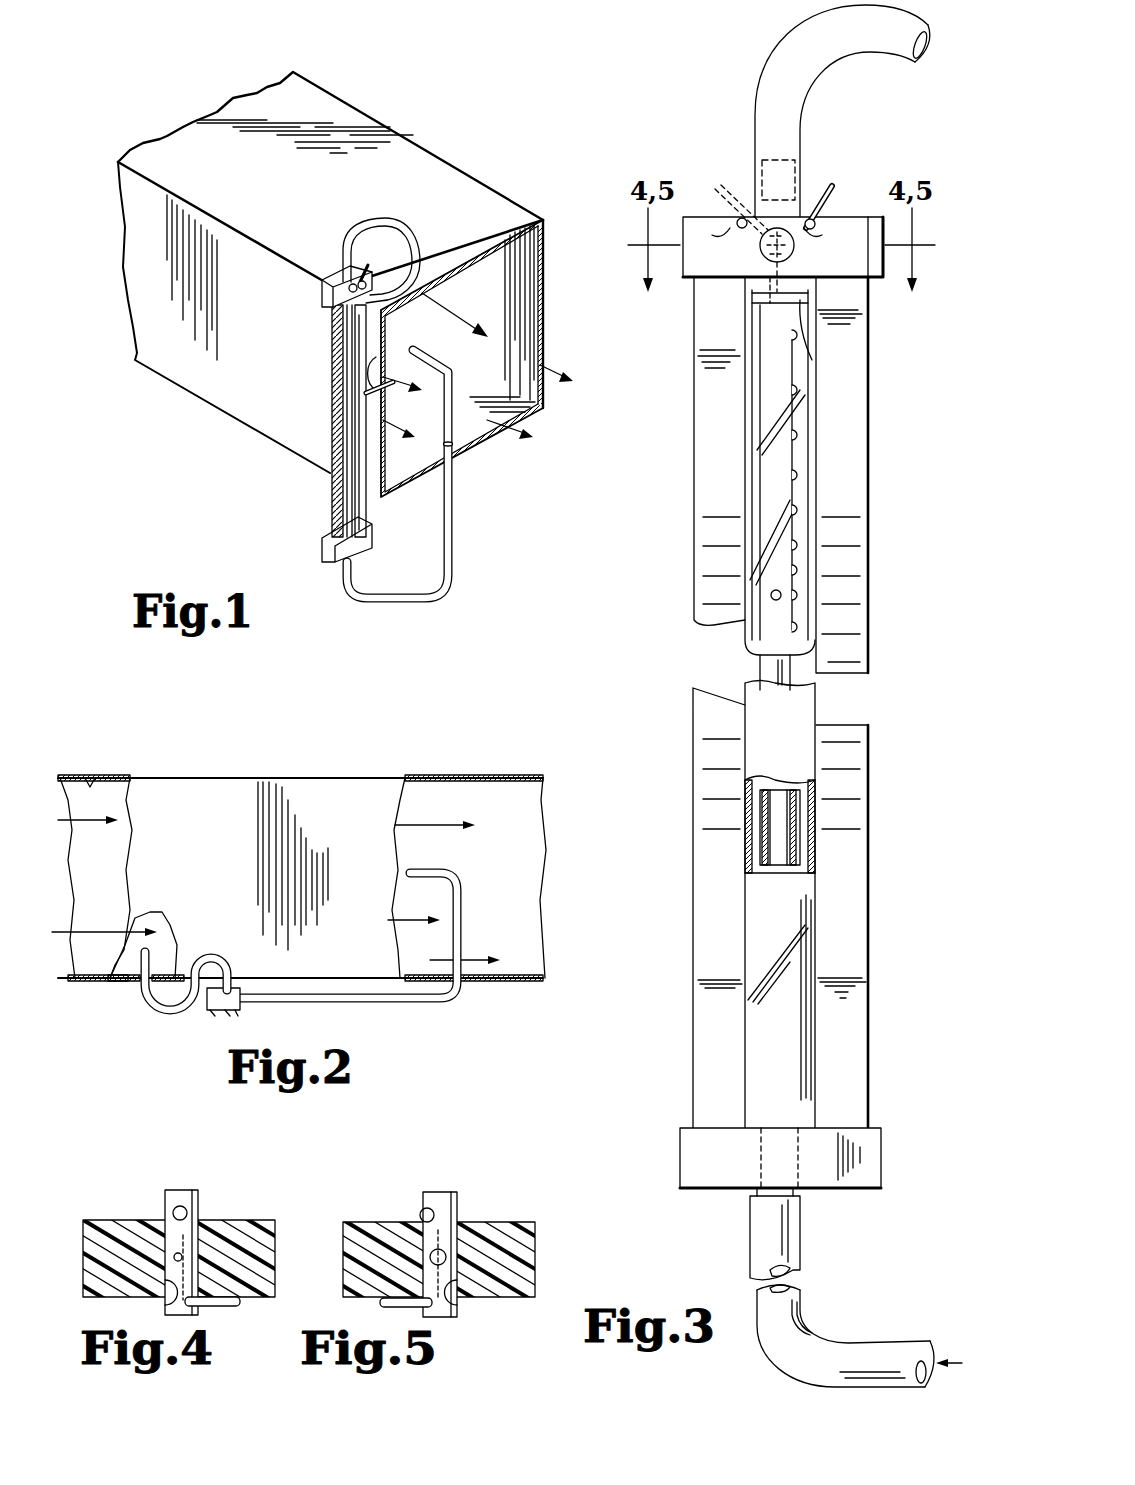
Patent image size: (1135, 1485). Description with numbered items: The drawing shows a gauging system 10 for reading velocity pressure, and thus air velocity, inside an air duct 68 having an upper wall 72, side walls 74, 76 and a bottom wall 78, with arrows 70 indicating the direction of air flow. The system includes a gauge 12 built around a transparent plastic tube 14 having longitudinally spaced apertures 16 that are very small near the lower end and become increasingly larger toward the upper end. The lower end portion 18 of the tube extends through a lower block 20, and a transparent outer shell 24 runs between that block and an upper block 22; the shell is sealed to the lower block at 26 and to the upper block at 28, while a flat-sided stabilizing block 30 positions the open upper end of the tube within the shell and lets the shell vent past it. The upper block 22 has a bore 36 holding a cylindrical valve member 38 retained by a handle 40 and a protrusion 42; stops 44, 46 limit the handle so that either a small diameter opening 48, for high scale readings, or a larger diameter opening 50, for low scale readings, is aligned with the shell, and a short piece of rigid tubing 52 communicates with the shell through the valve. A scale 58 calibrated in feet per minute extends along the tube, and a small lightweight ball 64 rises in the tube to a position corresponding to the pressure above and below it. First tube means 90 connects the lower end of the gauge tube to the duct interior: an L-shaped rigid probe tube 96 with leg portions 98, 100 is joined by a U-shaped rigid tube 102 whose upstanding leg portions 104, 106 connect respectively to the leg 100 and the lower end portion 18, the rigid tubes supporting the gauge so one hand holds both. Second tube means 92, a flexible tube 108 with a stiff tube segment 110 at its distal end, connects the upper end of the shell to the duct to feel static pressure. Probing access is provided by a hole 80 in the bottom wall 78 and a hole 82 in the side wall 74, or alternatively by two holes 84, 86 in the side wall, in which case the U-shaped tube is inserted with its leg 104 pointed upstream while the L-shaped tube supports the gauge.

In FIG. 1, the gauging system 10 is at (303, 493).
In FIG. 2, the gauging system 10 is at (225, 1057).
In FIG. 1, the gauge 12 is at (318, 428).
In FIG. 2, the gauge 12 is at (214, 1022).
In FIG. 3, the gauge 12 is at (670, 590).
In FIG. 3, the transparent plastic tube 14 is at (760, 838).
In FIG. 3, the apertures 16 is at (792, 567).
In FIG. 3, the lower end portion 18 is at (770, 1200).
In FIG. 3, the lower block 20 is at (872, 1172).
In FIG. 4, the lower block 20 is at (257, 1240).
In FIG. 5, the lower block 20 is at (525, 1225).
In FIG. 3, the upper block 22 is at (703, 282).
In FIG. 3, the transparent plastic outer shell 24 is at (755, 913).
In FIG. 3, the seal 26 is at (810, 1130).
In FIG. 3, the seal 28 is at (727, 290).
In FIG. 3, the stabilizing block 30 is at (812, 360).
In FIG. 4, the bore 36 is at (165, 1308).
In FIG. 5, the bore 36 is at (455, 1302).
In FIG. 4, the valve member 38 is at (198, 1195).
In FIG. 5, the valve member 38 is at (455, 1195).
In FIG. 3, the handle 40 is at (718, 185).
In FIG. 4, the handle 40 is at (240, 1302).
In FIG. 5, the handle 40 is at (395, 1303).
In FIG. 4, the protrusion 42 is at (173, 1210).
In FIG. 5, the protrusion 42 is at (420, 1212).
In FIG. 3, the stop 44 is at (838, 220).
In FIG. 3, the stop 46 is at (712, 235).
In FIG. 3, the small diameter opening 48 is at (797, 250).
In FIG. 4, the small diameter opening 48 is at (182, 1256).
In FIG. 3, the larger diameter opening 50 is at (762, 312).
In FIG. 5, the larger diameter opening 50 is at (445, 1255).
In FIG. 3, the rigid plastic tubing 52 is at (760, 212).
In FIG. 3, the scale 58 is at (858, 473).
In FIG. 3, the ball 64 is at (776, 600).
In FIG. 1, the air duct 68 is at (445, 178).
In FIG. 2, the air duct 68 is at (230, 777).
In FIG. 1, the arrows 70 is at (455, 313).
In FIG. 2, the arrows 70 is at (90, 927).
In FIG. 1, the upper wall 72 is at (258, 188).
In FIG. 2, the upper wall 72 is at (238, 865).
In FIG. 1, the side wall 74 is at (256, 335).
In FIG. 2, the side wall 74 is at (70, 978).
In FIG. 1, the side wall 76 is at (528, 296).
In FIG. 2, the side wall 76 is at (90, 787).
In FIG. 1, the bottom wall 78 is at (413, 468).
In FIG. 2, the bottom wall 78 is at (528, 865).
In FIG. 1, the hole 80 is at (455, 455).
In FIG. 1, the hole 82 is at (386, 359).
In FIG. 2, the hole 84 is at (480, 985).
In FIG. 2, the hole 86 is at (143, 988).
In FIG. 1, the first tube means 90 is at (443, 586).
In FIG. 2, the first tube means 90 is at (430, 1022).
In FIG. 3, the first tube means 90 is at (757, 1357).
In FIG. 1, the second tube means 92 is at (353, 222).
In FIG. 2, the second tube means 92 is at (135, 1038).
In FIG. 3, the second tube means 92 is at (770, 36).
In FIG. 1, the L-shaped rigid probe tube 96 is at (462, 372).
In FIG. 2, the L-shaped rigid probe tube 96 is at (283, 1000).
In FIG. 1, the leg portion 98 is at (430, 338).
In FIG. 3, the leg portion 98 is at (760, 1305).
In FIG. 1, the leg portion 100 is at (466, 418).
In FIG. 2, the leg portion 100 is at (370, 995).
In FIG. 1, the U-shaped rigid tube 102 is at (462, 558).
In FIG. 2, the U-shaped rigid tube 102 is at (458, 910).
In FIG. 1, the upstanding leg portion 104 is at (462, 520).
In FIG. 2, the upstanding leg portion 104 is at (428, 873).
In FIG. 1, the upstanding leg portion 106 is at (350, 580).
In FIG. 2, the upstanding leg portion 106 is at (447, 1003).
In FIG. 1, the flexible tube 108 is at (420, 260).
In FIG. 2, the flexible tube 108 is at (190, 1010).
In FIG. 3, the flexible tube 108 is at (855, 45).
In FIG. 1, the rigid tube segment 110 is at (392, 385).
In FIG. 2, the rigid tube segment 110 is at (150, 950).